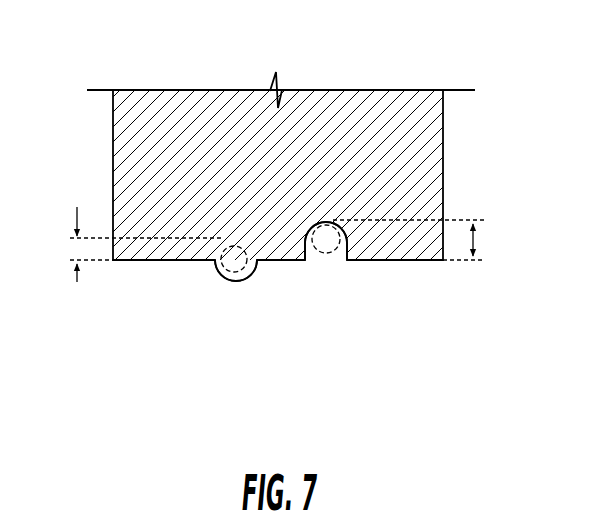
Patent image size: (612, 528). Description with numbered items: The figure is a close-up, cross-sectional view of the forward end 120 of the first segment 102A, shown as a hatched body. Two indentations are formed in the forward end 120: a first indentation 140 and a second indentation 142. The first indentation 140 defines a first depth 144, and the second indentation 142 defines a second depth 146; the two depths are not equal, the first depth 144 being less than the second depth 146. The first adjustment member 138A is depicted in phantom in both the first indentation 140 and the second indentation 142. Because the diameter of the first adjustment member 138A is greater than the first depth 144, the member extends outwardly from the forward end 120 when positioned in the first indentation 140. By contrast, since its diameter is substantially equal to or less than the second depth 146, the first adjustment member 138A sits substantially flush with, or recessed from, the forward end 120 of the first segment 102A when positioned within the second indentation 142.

The first segment 102A is at (340, 110).
The forward end 120 is at (163, 285).
The first adjustment member 138A is at (234, 273).
The first indentation 140 is at (214, 268).
The second indentation 142 is at (309, 268).
The first depth 144 is at (75, 217).
The second depth 146 is at (478, 240).